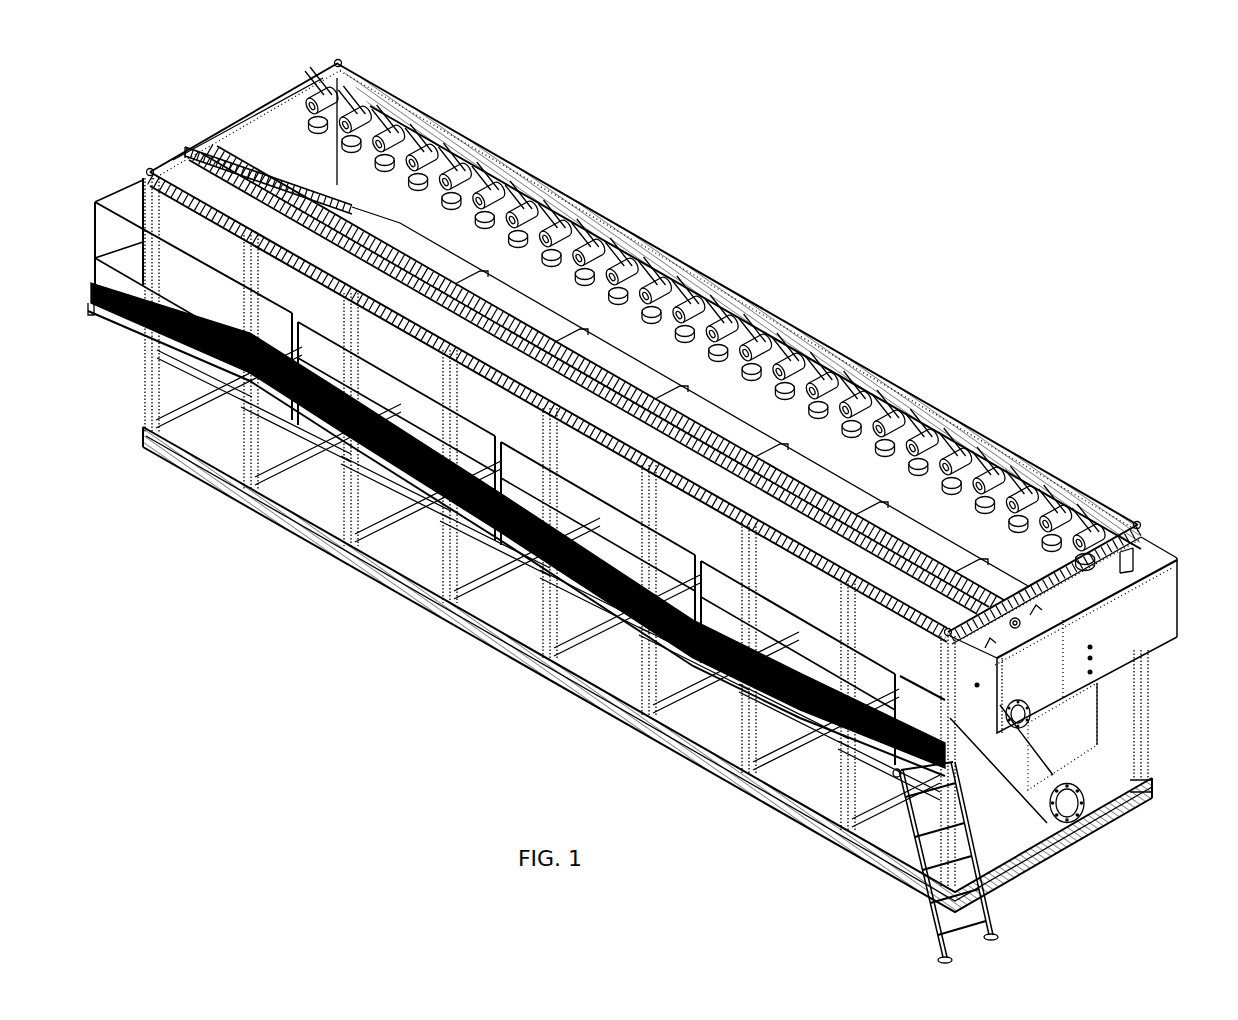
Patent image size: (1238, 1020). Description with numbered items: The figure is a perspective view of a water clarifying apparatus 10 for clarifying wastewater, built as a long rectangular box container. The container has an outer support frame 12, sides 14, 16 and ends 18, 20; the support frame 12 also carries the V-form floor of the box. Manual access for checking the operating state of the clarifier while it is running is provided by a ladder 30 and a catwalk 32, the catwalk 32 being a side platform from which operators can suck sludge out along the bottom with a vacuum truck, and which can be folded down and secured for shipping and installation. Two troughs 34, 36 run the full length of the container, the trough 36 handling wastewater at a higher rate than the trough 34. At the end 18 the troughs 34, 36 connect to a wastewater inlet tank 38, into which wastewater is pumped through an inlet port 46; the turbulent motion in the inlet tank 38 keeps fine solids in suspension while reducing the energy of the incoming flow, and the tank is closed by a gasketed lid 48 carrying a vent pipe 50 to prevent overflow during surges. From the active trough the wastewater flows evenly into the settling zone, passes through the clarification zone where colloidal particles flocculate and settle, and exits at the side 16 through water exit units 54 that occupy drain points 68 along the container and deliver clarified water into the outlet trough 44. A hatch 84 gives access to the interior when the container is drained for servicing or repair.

The treatment system 10 is at (651, 500).
The outer support frame 12 is at (551, 605).
The side 14 is at (190, 225).
The side 16 is at (877, 480).
The end 18 is at (1077, 590).
The end 20 is at (271, 124).
The ladder 30 is at (928, 915).
The catwalk 32 is at (698, 665).
The trough 34 is at (212, 167).
The trough 36 is at (217, 152).
The wastewater inlet tank 38 is at (1032, 678).
The outlet trough 44 is at (1176, 558).
The inlet port 46 is at (1090, 757).
The gasketed lid 48 is at (1038, 602).
The vent pipe 50 is at (1007, 628).
The water exit unit 54 is at (813, 388).
The drain points 68 is at (705, 319).
The hatch 84 is at (1055, 826).